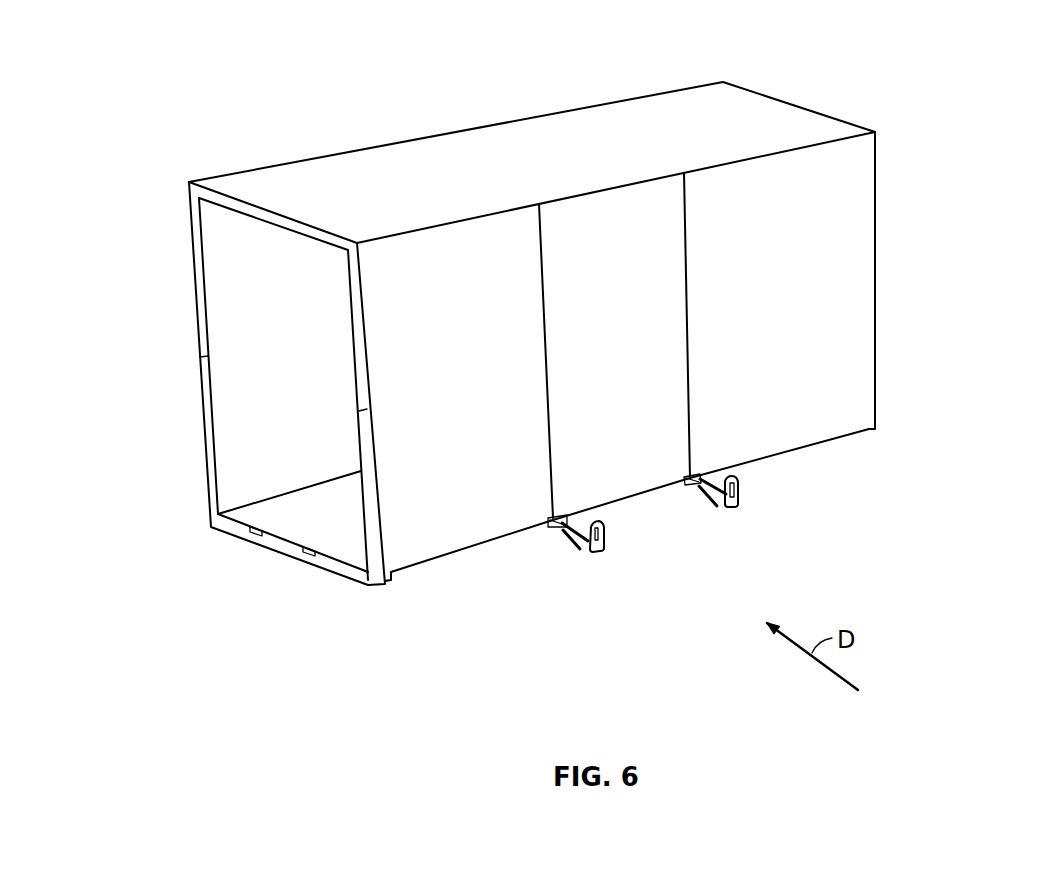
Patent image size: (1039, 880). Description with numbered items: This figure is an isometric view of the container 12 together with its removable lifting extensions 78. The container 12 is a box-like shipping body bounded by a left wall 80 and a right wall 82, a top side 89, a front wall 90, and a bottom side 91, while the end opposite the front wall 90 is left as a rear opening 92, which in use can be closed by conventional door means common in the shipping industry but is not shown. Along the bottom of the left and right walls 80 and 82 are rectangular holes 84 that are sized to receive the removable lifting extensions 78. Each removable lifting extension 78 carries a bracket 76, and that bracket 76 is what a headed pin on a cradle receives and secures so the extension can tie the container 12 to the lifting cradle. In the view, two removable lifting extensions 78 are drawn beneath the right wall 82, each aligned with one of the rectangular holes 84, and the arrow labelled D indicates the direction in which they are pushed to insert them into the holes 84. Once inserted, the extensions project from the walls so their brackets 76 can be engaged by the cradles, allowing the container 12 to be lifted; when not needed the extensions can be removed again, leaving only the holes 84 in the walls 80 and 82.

The container 12 is at (930, 285).
The bracket 76 is at (740, 487).
The removable lifting extension 78 is at (580, 552).
The left wall 80 is at (683, 89).
The right wall 82 is at (865, 372).
The rectangular hole 84 is at (557, 528).
The top side 89 is at (777, 110).
The front wall 90 is at (877, 173).
The bottom side 91 is at (458, 552).
The rear opening 92 is at (215, 265).